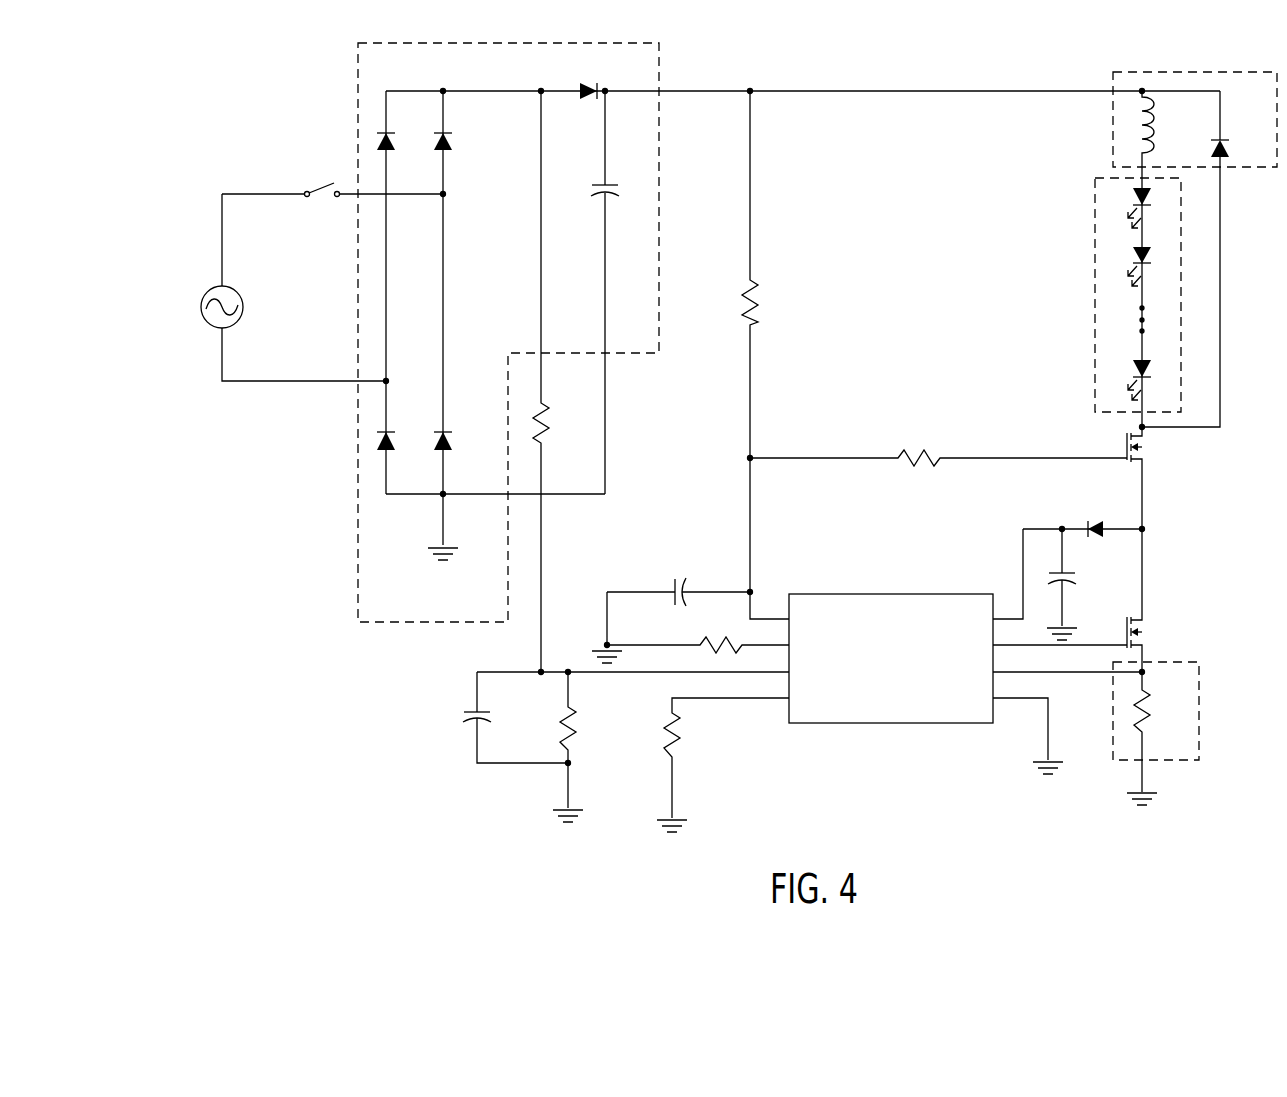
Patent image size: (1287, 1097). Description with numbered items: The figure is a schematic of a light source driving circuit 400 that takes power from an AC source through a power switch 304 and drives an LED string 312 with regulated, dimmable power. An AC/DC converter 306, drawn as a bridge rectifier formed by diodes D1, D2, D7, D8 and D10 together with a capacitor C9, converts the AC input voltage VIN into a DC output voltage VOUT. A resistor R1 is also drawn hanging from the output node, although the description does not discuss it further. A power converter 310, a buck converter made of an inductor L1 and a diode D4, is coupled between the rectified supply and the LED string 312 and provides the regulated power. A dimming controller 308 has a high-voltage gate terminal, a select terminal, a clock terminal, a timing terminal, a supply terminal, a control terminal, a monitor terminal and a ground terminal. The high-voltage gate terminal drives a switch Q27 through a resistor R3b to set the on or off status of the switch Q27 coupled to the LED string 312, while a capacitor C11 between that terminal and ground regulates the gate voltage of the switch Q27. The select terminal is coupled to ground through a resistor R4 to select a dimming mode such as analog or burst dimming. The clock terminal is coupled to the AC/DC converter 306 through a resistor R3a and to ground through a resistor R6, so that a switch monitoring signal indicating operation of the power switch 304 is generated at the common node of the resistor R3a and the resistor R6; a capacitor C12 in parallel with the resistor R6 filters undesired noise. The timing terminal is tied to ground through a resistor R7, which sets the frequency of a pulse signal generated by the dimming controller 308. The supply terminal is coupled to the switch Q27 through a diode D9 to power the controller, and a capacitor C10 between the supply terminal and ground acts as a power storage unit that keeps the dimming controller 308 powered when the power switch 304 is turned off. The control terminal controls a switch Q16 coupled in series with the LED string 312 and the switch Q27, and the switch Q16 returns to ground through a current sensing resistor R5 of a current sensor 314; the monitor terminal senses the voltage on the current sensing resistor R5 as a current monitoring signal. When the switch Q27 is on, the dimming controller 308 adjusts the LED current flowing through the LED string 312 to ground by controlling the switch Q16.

The light source driving circuit 400 is at (276, 107).
The power switch 304 is at (330, 192).
The AC/DC converter 306 is at (367, 78).
The dimming controller 308 is at (884, 594).
The power converter 310 is at (1112, 118).
The LED string 312 is at (1093, 254).
The current sensor 314 is at (1200, 700).
The AC input voltage VIN is at (266, 192).
The DC output voltage VOUT is at (684, 91).
The diode D1 is at (390, 132).
The diode D2 is at (447, 132).
The diode D7 is at (390, 431).
The diode D8 is at (447, 431).
The diode D10 is at (582, 88).
The capacitor C9 is at (612, 185).
The resistor R1 is at (747, 300).
The resistor R3a is at (547, 417).
The resistor R3b is at (921, 452).
The inductor L1 is at (1152, 130).
The diode D4 is at (1224, 139).
The switch Q27 is at (1126, 458).
The diode D9 is at (1084, 511).
The capacitor C10 is at (1069, 571).
The switch Q16 is at (1146, 640).
The current sensing resistor R5 is at (1147, 703).
The capacitor C11 is at (686, 588).
The resistor R4 is at (729, 646).
The capacitor C12 is at (482, 711).
The resistor R6 is at (572, 724).
The resistor R7 is at (677, 730).